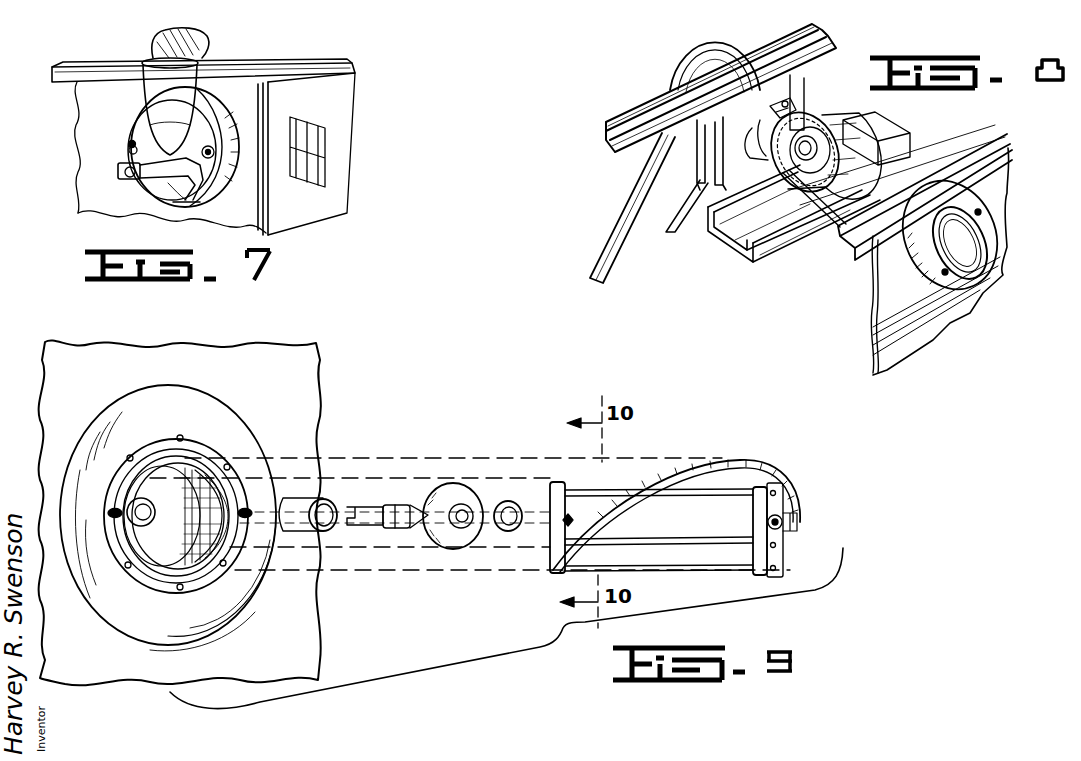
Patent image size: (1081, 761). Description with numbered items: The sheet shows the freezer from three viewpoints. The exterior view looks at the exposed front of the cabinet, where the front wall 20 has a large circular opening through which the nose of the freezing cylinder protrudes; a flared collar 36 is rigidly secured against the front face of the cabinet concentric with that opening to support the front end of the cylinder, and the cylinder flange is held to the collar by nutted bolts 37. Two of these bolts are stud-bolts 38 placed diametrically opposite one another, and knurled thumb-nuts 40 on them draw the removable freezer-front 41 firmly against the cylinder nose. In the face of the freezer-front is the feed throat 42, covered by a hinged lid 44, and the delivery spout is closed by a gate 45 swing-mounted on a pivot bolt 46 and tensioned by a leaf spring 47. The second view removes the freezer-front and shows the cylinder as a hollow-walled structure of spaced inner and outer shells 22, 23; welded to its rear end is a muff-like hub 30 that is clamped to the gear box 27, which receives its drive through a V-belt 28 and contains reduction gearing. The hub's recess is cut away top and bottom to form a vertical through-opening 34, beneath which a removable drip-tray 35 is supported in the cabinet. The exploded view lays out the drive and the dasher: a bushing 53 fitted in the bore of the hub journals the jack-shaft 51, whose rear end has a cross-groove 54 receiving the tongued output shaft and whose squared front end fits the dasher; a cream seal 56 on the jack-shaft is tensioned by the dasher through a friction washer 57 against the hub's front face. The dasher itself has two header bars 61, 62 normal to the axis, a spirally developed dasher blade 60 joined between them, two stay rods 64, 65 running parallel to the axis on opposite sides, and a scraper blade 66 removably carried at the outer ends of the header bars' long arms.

In FIG. 7, the front wall 20 is at (83, 180).
In FIG. 8, the front wall 20 is at (887, 290).
In FIG. 9, the front wall 20 is at (50, 370).
In FIG. 8, the inner shell 22 is at (852, 148).
In FIG. 9, the inner shell 22 is at (165, 558).
In FIG. 8, the outer shell 23 is at (843, 122).
In FIG. 8, the gear box 27 is at (687, 155).
In FIG. 8, the V-belt 28 is at (625, 200).
In FIG. 8, the hub 30 is at (760, 133).
In FIG. 9, the hub 30 is at (140, 526).
In FIG. 8, the through-opening 34 is at (789, 112).
In FIG. 8, the drip-tray 35 is at (793, 227).
In FIG. 7, the flared collar 36 is at (228, 117).
In FIG. 8, the flared collar 36 is at (975, 195).
In FIG. 9, the flared collar 36 is at (95, 437).
In FIG. 8, the nutted bolts 37 is at (962, 218).
In FIG. 9, the nutted bolts 37 is at (178, 440).
In FIG. 7, the stud-bolts 38 is at (129, 144).
In FIG. 8, the stud-bolts 38 is at (993, 231).
In FIG. 9, the stud-bolts 38 is at (108, 512).
In FIG. 7, the knurled thumb-nuts 40 is at (130, 153).
In FIG. 7, the freezer-front 41 is at (146, 129).
In FIG. 7, the feed throat 42 is at (158, 56).
In FIG. 7, the hinged lid 44 is at (205, 35).
In FIG. 7, the gate 45 is at (173, 197).
In FIG. 7, the pivot bolt 46 is at (130, 187).
In FIG. 7, the leaf spring 47 is at (120, 178).
In FIG. 9, the jack-shaft 51 is at (385, 528).
In FIG. 9, the bushing 53 is at (327, 501).
In FIG. 9, the cross-groove 54 is at (352, 526).
In FIG. 9, the cream seal 56 is at (466, 499).
In FIG. 9, the friction washer 57 is at (507, 532).
In FIG. 9, the dasher blade 60 is at (727, 464).
In FIG. 9, the header bar 61 is at (555, 487).
In FIG. 9, the header bar 62 is at (782, 553).
In FIG. 9, the stay rod 64 is at (704, 542).
In FIG. 9, the stay rod 65 is at (617, 490).
In FIG. 9, the scraper blade 66 is at (720, 571).